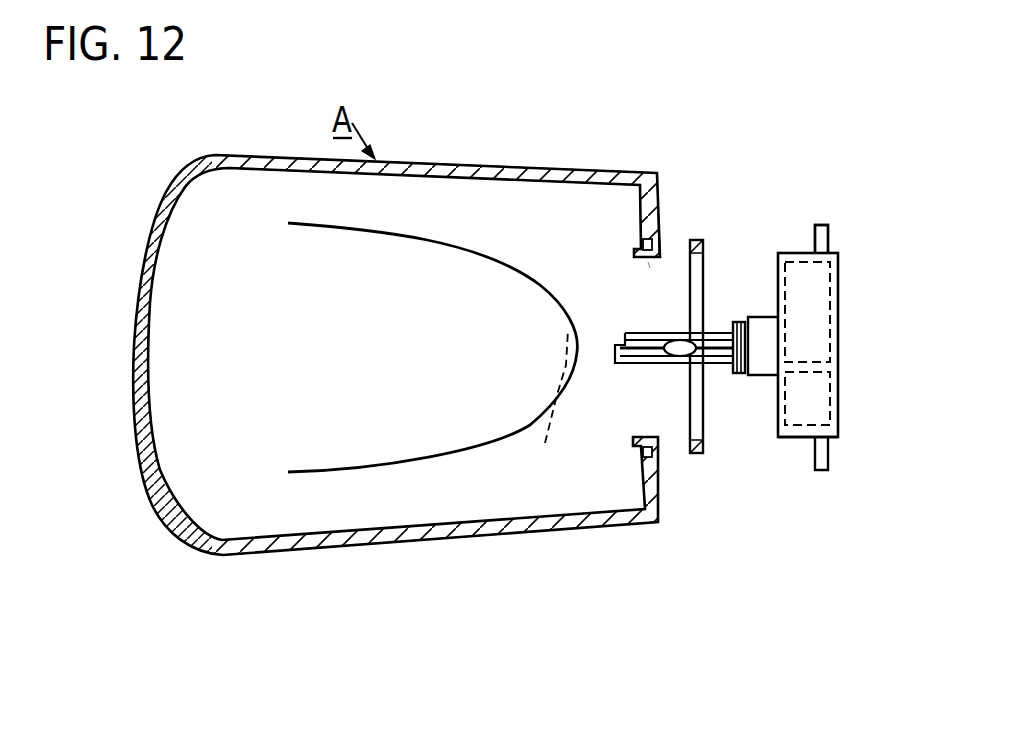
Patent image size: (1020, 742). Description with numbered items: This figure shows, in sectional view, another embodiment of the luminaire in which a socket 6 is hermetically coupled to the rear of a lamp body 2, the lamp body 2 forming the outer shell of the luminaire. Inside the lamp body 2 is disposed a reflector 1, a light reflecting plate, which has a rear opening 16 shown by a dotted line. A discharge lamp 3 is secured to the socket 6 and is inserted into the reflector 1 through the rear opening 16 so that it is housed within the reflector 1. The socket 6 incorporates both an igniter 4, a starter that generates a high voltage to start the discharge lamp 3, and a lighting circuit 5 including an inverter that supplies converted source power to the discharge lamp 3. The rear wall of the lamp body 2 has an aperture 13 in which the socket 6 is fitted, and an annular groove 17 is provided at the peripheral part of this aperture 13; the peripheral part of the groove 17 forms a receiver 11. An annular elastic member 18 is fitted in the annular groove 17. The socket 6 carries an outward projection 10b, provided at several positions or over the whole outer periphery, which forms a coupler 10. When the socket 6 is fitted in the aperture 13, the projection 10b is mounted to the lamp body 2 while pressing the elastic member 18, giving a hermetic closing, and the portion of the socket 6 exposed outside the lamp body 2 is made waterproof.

The reflector 1 is at (380, 225).
The lamp body 2 is at (483, 180).
The discharge lamp 3 is at (673, 335).
The igniter 4 is at (805, 440).
The lighting circuit 5 is at (778, 283).
The socket 6 is at (780, 438).
The coupler 10 is at (828, 225).
The outward projection 10b is at (817, 225).
The receiver 11 is at (659, 183).
The aperture 13 is at (655, 270).
The rear opening 16 is at (545, 410).
The annular groove 17 is at (652, 247).
The annular elastic member 18 is at (700, 455).